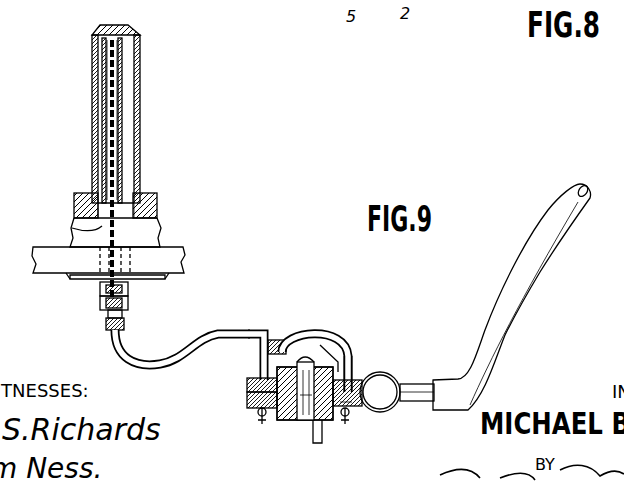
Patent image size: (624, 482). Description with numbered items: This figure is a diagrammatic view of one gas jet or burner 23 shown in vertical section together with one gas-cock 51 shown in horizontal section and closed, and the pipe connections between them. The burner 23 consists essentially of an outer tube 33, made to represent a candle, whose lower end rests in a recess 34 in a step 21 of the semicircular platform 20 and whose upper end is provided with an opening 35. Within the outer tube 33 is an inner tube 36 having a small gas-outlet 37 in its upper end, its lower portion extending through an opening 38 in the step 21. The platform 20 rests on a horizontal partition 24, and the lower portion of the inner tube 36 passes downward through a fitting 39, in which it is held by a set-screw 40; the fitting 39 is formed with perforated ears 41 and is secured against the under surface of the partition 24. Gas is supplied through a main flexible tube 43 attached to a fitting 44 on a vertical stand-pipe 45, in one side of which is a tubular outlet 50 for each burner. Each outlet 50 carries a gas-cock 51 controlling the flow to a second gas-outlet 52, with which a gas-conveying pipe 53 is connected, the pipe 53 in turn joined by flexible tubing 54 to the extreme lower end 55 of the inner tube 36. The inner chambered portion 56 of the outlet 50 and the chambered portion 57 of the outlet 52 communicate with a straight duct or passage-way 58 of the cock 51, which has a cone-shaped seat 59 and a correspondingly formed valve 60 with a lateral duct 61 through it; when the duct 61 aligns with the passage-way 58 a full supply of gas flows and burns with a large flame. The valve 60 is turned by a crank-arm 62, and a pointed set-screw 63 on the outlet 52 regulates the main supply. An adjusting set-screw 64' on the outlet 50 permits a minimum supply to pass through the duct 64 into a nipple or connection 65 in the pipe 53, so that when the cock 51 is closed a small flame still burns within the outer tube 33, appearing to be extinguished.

The platform 20 is at (161, 236).
The step 21 is at (158, 213).
The gas jet or burner 23 is at (141, 120).
The horizontal partition 24 is at (56, 266).
The outer tube 33 is at (141, 118).
The recess 34 is at (147, 193).
The opening 35 is at (117, 28).
The inner tube 36 is at (122, 94).
The gas-outlet 37 is at (118, 45).
The opening 38 is at (72, 229).
The fitting 39 is at (104, 290).
The set-screw 40 is at (128, 303).
The perforated ear 41 is at (76, 281).
The main gas tube or pipe 43 is at (497, 301).
The fitting 44 is at (416, 402).
The stand-pipe 45 is at (396, 384).
The tubular outlet 50 is at (378, 377).
The gas-cock 51 is at (294, 410).
The gas-outlet 52 is at (249, 398).
The gas-conveying pipe 53 is at (259, 364).
The flexible tubing 54 is at (173, 357).
The lower end 55 is at (106, 320).
The inner tubular or chambered portion 56 is at (380, 412).
The inner tubular or chambered portion 57 is at (250, 382).
The duct or passage-way 58 is at (327, 418).
The cone-shaped seat 59 is at (333, 348).
The valve 60 is at (352, 358).
The lateral duct 61 is at (305, 408).
The crank-arm 62 is at (319, 440).
The pointed set-screw 63 is at (262, 418).
The duct 64 is at (315, 352).
The adjusting set-screw 64' is at (359, 423).
The nipple or connection 65 is at (287, 330).